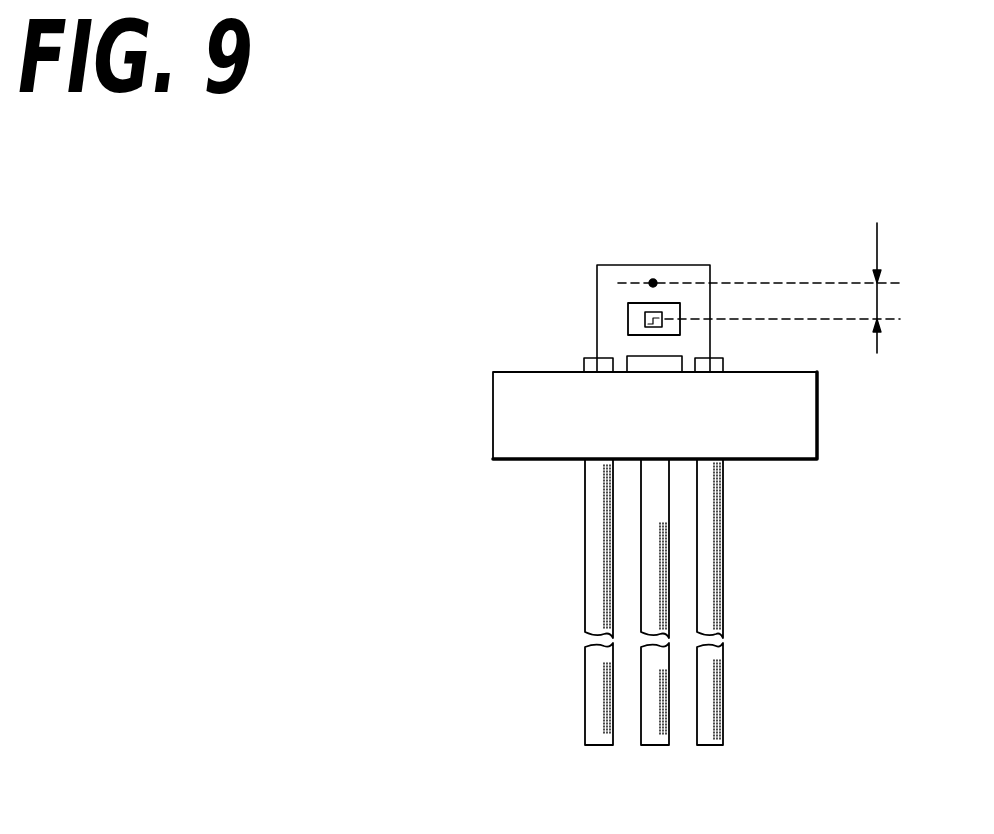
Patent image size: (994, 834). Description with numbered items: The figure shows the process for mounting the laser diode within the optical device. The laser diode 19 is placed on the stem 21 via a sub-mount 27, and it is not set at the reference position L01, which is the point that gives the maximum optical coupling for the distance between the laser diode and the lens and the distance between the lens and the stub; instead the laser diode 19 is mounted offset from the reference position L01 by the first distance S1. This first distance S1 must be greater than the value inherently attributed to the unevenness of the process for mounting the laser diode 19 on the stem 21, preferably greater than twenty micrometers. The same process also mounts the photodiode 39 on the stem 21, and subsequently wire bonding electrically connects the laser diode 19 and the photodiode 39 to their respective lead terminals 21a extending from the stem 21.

The laser diode 19 is at (645, 322).
The sub-mount 27 is at (640, 305).
The stem 21 is at (803, 417).
The lead terminals 21a is at (707, 587).
The photodiode 39 is at (668, 365).
The reference position L01 is at (654, 280).
The first distance S1 is at (895, 288).